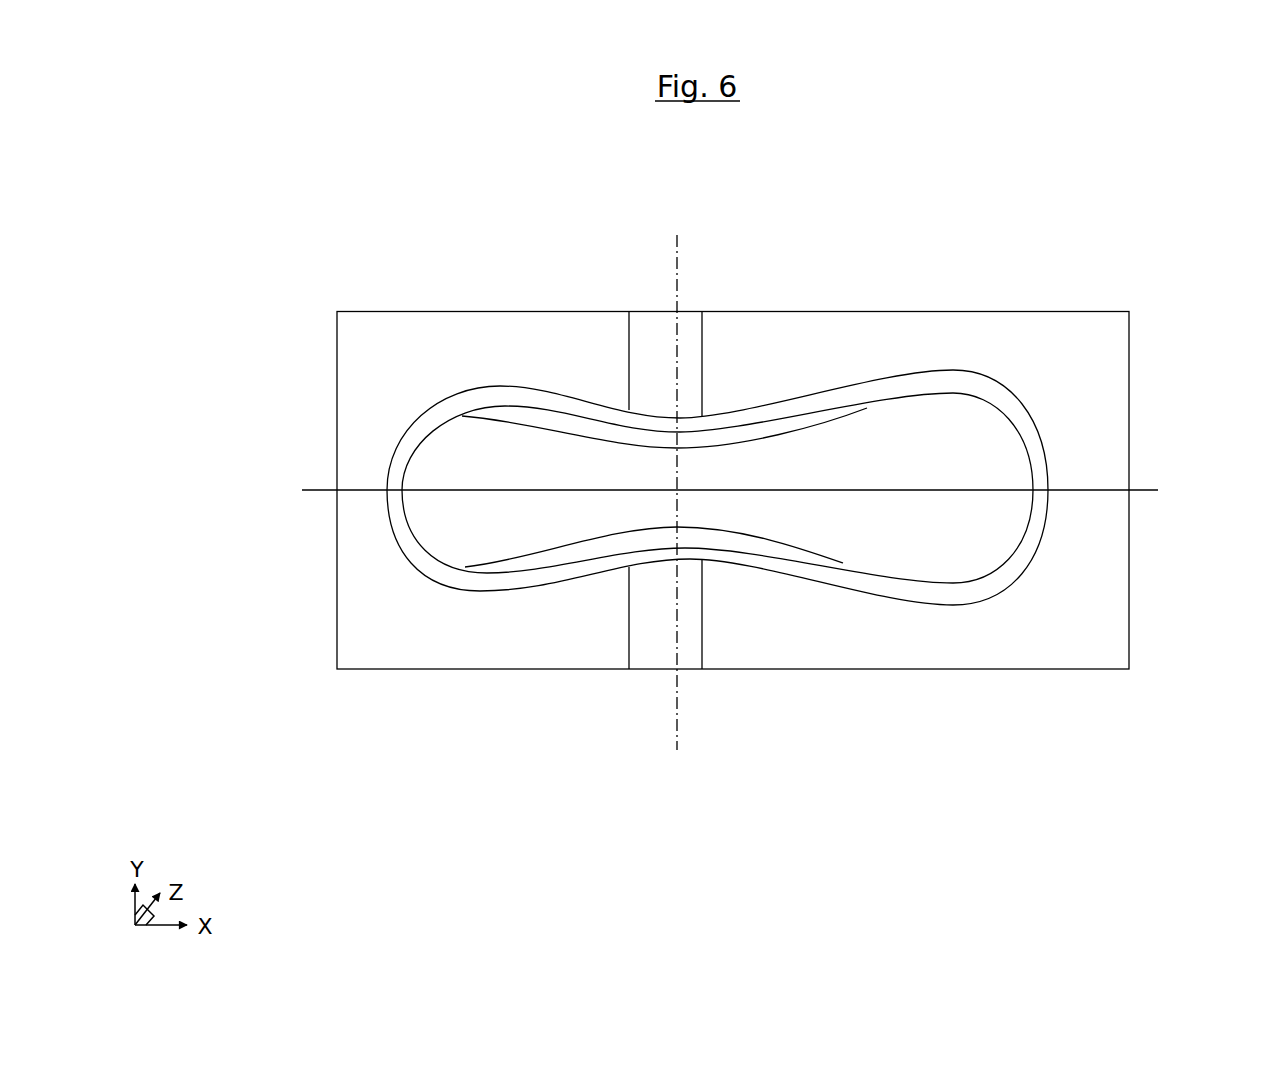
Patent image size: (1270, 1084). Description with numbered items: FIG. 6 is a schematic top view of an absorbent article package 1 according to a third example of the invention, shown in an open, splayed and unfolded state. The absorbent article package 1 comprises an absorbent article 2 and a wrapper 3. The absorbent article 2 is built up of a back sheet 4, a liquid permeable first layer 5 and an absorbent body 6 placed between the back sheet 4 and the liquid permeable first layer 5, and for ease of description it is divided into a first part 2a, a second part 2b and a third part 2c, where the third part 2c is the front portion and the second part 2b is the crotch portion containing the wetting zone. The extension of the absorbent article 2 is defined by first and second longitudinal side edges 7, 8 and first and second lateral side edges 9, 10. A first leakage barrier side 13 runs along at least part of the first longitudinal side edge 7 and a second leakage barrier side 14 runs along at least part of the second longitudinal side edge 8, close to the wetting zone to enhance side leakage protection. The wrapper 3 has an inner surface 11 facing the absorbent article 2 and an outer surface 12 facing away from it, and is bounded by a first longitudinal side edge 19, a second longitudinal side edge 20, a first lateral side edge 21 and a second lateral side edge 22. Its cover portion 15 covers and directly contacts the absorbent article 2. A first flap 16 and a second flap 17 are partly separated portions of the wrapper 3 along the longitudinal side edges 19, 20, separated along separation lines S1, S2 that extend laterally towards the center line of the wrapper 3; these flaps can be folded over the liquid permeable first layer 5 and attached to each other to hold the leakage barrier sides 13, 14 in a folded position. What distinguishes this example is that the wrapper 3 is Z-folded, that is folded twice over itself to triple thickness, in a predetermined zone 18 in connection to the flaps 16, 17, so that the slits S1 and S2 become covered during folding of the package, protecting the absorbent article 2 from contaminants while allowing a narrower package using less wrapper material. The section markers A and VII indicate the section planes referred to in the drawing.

The absorbent article package 1 is at (530, 287).
The absorbent article 2 is at (585, 283).
The first part 2a is at (904, 508).
The second part 2b is at (692, 512).
The third part 2c is at (473, 447).
The wrapper 3 is at (1097, 532).
The back sheet 4 is at (870, 514).
The liquid permeable first layer 5 is at (966, 453).
The absorbent body 6 is at (975, 516).
The first longitudinal side edge 7 is at (795, 402).
The second longitudinal side edge 8 is at (608, 570).
The first lateral side edge 9 is at (383, 508).
The second lateral side edge 10 is at (1049, 437).
The inner surface 11 is at (387, 367).
The outer surface 12 is at (972, 335).
The first leakage barrier side 13 is at (730, 435).
The second leakage barrier side 14 is at (553, 553).
The cover portion 15 is at (437, 467).
The first flap 16 is at (646, 364).
The second flap 17 is at (647, 596).
The predetermined zone 18 is at (639, 620).
The first longitudinal side edge 19 is at (887, 308).
The second longitudinal side edge 20 is at (362, 671).
The first lateral side edge 21 is at (335, 600).
The second lateral side edge 22 is at (1131, 512).
The separation line S1 is at (699, 635).
The separation line S2 is at (629, 338).
The section line A- A is at (680, 245).
The section line VII- VII is at (305, 488).